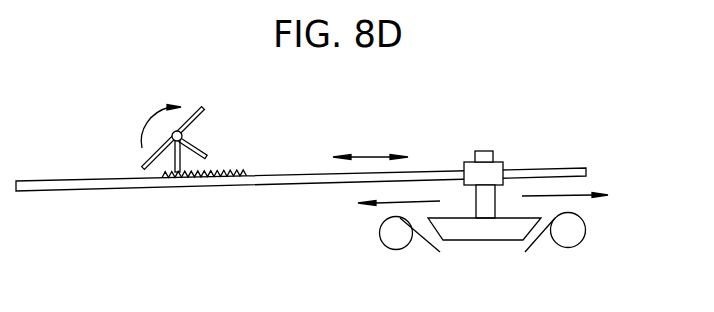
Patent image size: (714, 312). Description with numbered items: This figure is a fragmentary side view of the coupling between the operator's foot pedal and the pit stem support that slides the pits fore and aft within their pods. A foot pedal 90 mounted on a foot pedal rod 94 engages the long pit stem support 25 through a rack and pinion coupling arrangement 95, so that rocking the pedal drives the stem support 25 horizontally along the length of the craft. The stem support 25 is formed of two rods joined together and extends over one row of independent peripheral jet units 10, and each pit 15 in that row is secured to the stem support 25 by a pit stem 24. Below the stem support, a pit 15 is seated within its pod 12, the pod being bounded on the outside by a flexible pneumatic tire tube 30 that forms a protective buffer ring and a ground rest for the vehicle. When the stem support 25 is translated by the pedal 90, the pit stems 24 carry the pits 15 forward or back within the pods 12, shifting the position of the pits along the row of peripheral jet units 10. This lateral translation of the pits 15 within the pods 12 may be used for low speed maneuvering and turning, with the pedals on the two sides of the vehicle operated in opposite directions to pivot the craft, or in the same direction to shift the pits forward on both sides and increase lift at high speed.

The peripheral jet unit or module 10 is at (634, 209).
The pod 12 is at (424, 256).
The pit 15 is at (496, 251).
The pit stem 24 is at (493, 157).
The pit stem support 25 is at (285, 184).
The pneumatic tire tube 30 is at (580, 243).
The foot pedal 90 is at (200, 106).
The foot pedal rod 94 is at (184, 141).
The rack and pinion coupling arrangement 95 is at (227, 164).